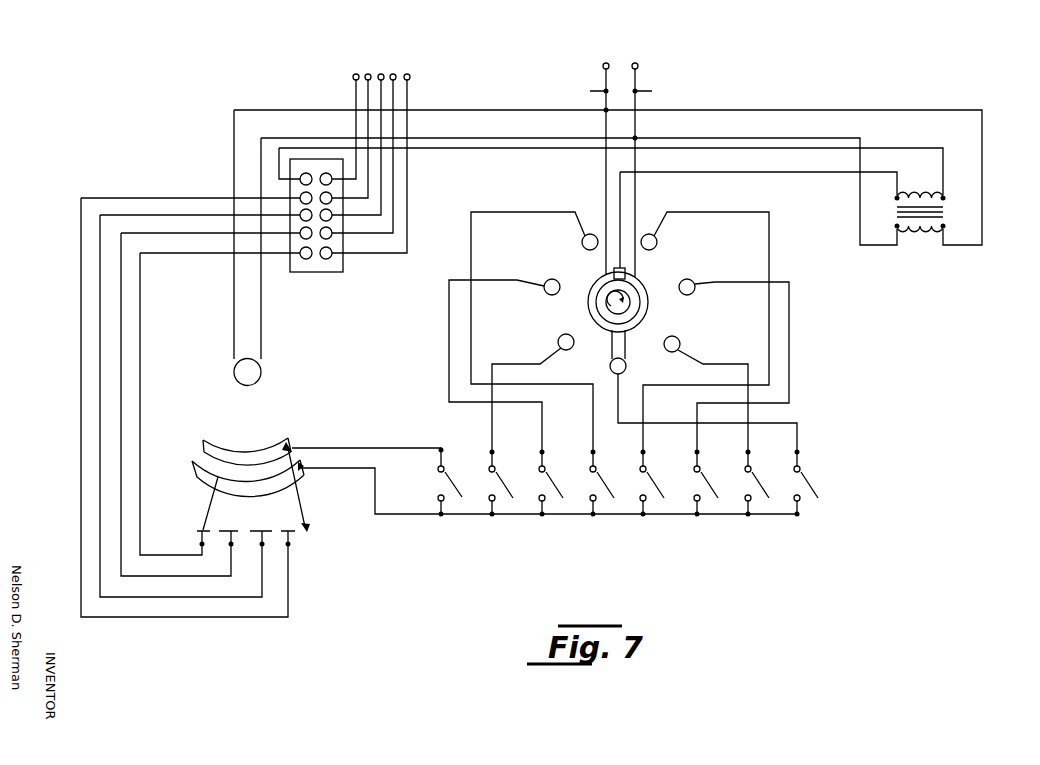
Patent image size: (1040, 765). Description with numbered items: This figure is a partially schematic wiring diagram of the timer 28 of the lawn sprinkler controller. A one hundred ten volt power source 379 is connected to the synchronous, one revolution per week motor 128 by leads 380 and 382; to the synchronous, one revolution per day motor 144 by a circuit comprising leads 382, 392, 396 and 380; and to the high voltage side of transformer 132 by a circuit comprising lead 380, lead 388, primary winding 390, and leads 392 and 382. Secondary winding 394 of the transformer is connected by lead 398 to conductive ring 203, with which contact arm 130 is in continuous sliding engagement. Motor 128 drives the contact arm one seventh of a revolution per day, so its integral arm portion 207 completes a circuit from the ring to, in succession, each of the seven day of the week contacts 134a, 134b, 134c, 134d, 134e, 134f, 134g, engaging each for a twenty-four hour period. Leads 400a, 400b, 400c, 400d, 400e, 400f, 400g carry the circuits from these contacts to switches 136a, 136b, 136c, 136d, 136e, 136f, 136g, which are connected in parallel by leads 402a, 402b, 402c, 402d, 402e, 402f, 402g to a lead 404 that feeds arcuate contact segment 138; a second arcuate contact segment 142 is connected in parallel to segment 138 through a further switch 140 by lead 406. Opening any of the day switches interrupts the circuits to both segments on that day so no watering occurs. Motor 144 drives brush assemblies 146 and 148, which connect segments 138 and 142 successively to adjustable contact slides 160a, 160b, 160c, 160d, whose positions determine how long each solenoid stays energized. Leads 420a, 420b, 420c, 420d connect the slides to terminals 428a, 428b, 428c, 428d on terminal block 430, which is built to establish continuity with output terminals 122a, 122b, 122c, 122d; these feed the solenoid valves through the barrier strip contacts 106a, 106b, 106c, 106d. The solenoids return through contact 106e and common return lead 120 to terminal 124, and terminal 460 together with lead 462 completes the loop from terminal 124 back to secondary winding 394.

The timer 28 is at (212, 135).
The contact 106a is at (410, 77).
The contact 106b is at (395, 74).
The contact 106c is at (382, 74).
The contact 106d is at (368, 74).
The contact 106e is at (353, 77).
The lead 120 is at (355, 120).
The timer terminal 124 is at (326, 173).
The timer terminal 122a is at (333, 254).
The timer terminal 122b is at (333, 235).
The timer terminal 122c is at (333, 217).
The timer terminal 122d is at (333, 199).
The synchronous motor 128 is at (648, 312).
The contact arm 130 is at (580, 308).
The transformer 132 is at (886, 207).
The contact 134a is at (560, 337).
The contact 134b is at (549, 280).
The contact 134c is at (582, 243).
The contact 134d is at (657, 242).
The contact 134e is at (694, 291).
The contact 134f is at (680, 343).
The contact 134g is at (626, 366).
The switch 136a is at (497, 470).
The switch 136b is at (547, 470).
The switch 136c is at (598, 470).
The switch 136d is at (648, 470).
The switch 136e is at (702, 470).
The switch 136f is at (753, 470).
The switch 136g is at (803, 477).
The arcuate contact segment 138 is at (193, 465).
The switch 140 is at (442, 466).
The arcuate contact segment 142 is at (203, 440).
The synchronous motor 144 is at (261, 376).
The brush assembly 146 is at (204, 512).
The brush assembly 148 is at (306, 501).
The contact slide 160a is at (195, 531).
The contact slide 160b is at (231, 530).
The contact slide 160c is at (275, 538).
The contact slide 160d is at (297, 533).
The ring 203 is at (633, 283).
The arm portion 207 is at (611, 342).
The power source 379 is at (613, 63).
The lead 380 is at (636, 184).
The lead 382 is at (605, 197).
The lead 388 is at (728, 170).
The primary winding 390 is at (922, 232).
The lead 392 is at (502, 110).
The secondary winding 394 is at (912, 197).
The lead 396 is at (261, 322).
The lead 398 is at (621, 200).
The lead 400a is at (490, 416).
The lead 400b is at (449, 335).
The lead 400c is at (470, 314).
The lead 400d is at (770, 238).
The lead 400e is at (790, 370).
The lead 400f is at (749, 417).
The lead 400g is at (798, 448).
The lead 402a is at (493, 512).
The lead 402b is at (543, 512).
The lead 402c is at (594, 512).
The lead 402d is at (644, 512).
The lead 402e is at (698, 512).
The lead 402f is at (749, 512).
The lead 402g is at (805, 514).
The lead 404 is at (400, 515).
The lead 406 is at (350, 432).
The lead 420a is at (140, 322).
The lead 420b is at (121, 540).
The lead 420c is at (100, 572).
The lead 420d is at (226, 615).
The terminal 428a is at (306, 262).
The terminal 428b is at (300, 232).
The terminal 428c is at (300, 214).
The terminal 428d is at (300, 197).
The terminal block 430 is at (326, 274).
The terminal 460 is at (305, 173).
The lead 462 is at (524, 149).